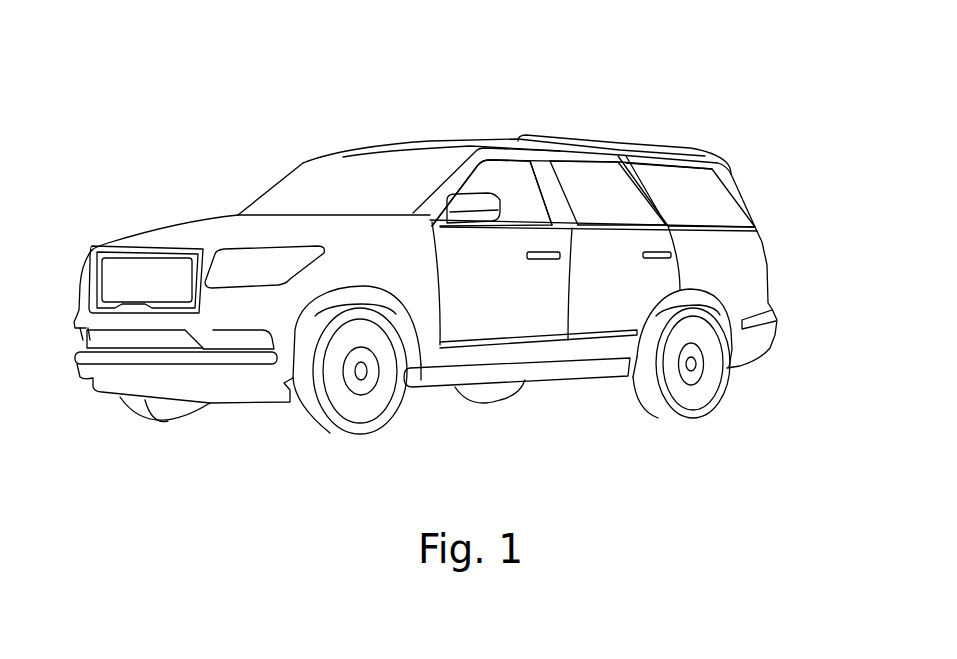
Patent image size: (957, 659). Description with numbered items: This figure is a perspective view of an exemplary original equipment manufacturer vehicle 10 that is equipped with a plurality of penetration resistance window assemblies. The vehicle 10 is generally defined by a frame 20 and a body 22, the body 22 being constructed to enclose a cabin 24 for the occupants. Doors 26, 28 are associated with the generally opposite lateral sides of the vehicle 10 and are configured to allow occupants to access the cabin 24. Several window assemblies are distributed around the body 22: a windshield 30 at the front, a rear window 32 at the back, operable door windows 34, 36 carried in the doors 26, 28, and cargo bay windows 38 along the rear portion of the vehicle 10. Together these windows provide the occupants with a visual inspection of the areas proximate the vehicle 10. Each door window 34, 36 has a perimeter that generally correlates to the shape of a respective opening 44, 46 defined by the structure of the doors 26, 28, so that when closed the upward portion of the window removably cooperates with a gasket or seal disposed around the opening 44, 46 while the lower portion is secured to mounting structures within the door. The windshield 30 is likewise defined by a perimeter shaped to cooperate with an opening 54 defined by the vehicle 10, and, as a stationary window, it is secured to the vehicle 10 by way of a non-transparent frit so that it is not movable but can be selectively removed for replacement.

The vehicle 10 is at (783, 83).
The frame 20 is at (420, 380).
The body 22 is at (274, 319).
The cabin 24 is at (353, 174).
The door 26 is at (512, 358).
The door 28 is at (600, 352).
The windshield 30 is at (406, 175).
The rear window 32 is at (766, 179).
The operable door window 34 is at (514, 176).
The operable door window 36 is at (600, 174).
The cargo bay window 38 is at (683, 180).
The opening 44 is at (483, 152).
The opening 46 is at (580, 158).
The opening 54 is at (302, 162).